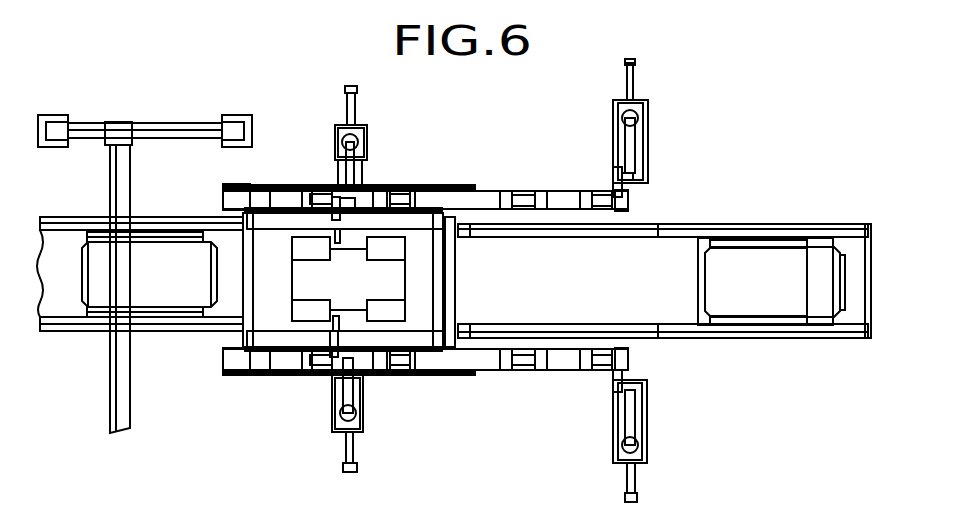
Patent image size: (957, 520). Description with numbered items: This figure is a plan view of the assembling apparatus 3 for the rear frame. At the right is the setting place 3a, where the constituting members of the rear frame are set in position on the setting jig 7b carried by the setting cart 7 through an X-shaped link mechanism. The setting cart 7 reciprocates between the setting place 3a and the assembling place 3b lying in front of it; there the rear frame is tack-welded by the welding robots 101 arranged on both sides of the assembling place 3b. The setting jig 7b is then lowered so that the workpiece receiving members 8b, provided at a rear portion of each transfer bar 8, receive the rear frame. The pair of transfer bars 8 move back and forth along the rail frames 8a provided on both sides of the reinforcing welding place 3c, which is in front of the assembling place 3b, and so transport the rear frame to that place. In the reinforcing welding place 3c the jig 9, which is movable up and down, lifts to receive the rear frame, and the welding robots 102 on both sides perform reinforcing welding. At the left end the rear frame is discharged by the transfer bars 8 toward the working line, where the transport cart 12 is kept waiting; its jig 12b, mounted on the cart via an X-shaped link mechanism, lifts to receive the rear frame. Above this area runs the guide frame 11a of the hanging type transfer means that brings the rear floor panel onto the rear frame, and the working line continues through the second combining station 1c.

The second combining station 1c is at (167, 289).
The assembling apparatus 3 is at (535, 120).
The setting place 3a is at (783, 290).
The assembling place 3b is at (582, 290).
The reinforcing welding place 3c is at (360, 290).
The setting cart 7 is at (763, 240).
The setting jig 7b is at (807, 263).
The transfer bar 8 is at (488, 200).
The rail frame 8a is at (445, 186).
The workpiece receiving member 8b is at (318, 195).
The jig 9 is at (305, 281).
The welding robot 101 is at (657, 143).
The welding robot 102 is at (368, 141).
The guide frame 11a is at (112, 396).
The transport cart 12 is at (163, 243).
The jig 12b is at (177, 292).